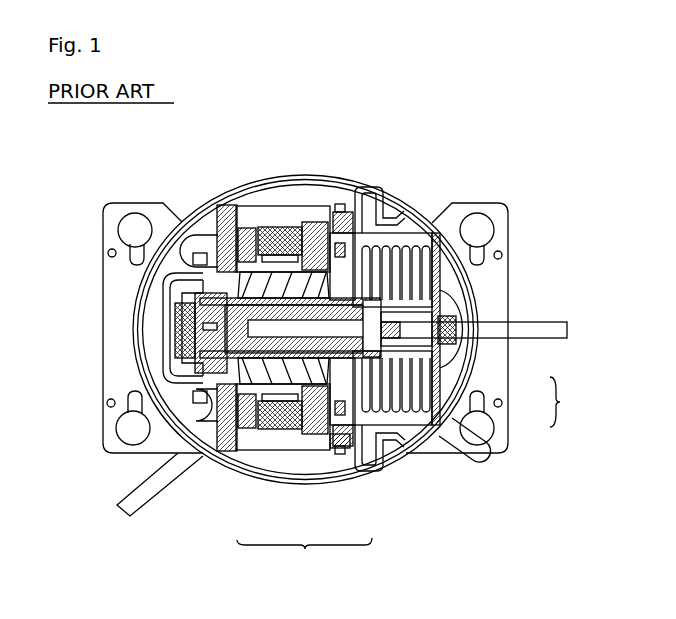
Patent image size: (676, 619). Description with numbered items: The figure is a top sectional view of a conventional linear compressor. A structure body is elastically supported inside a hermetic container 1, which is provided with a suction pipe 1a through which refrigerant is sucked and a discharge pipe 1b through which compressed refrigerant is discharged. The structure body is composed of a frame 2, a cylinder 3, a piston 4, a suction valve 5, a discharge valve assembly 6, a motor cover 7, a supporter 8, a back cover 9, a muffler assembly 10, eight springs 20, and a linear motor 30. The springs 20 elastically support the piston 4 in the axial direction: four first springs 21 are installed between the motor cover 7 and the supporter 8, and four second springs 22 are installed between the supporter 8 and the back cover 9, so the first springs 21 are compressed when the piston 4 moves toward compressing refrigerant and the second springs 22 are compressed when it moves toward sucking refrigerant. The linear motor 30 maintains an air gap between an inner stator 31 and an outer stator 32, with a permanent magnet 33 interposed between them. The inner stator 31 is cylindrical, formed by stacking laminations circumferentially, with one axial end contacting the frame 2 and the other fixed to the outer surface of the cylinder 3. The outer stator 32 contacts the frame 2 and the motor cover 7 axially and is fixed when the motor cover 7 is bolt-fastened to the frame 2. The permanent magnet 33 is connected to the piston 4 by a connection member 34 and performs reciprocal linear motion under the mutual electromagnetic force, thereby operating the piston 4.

The hermetic container 1 is at (187, 202).
The suction pipe 1a is at (540, 326).
The discharge pipe 1b is at (472, 461).
The frame 2 is at (227, 205).
The cylinder 3 is at (263, 228).
The piston 4 is at (297, 228).
The suction valve 5 is at (188, 305).
The discharge valve assembly 6 is at (172, 345).
The motor cover 7 is at (350, 230).
The supporter 8 is at (365, 247).
The back cover 9 is at (415, 243).
The muffler assembly 10 is at (433, 323).
The springs 20 is at (565, 402).
The first springs 21 is at (420, 370).
The second springs 22 is at (420, 396).
The linear motor 30 is at (304, 551).
The inner stator 31 is at (258, 446).
The outer stator 32 is at (273, 440).
The permanent magnet 33 is at (307, 447).
The connection member 34 is at (348, 453).